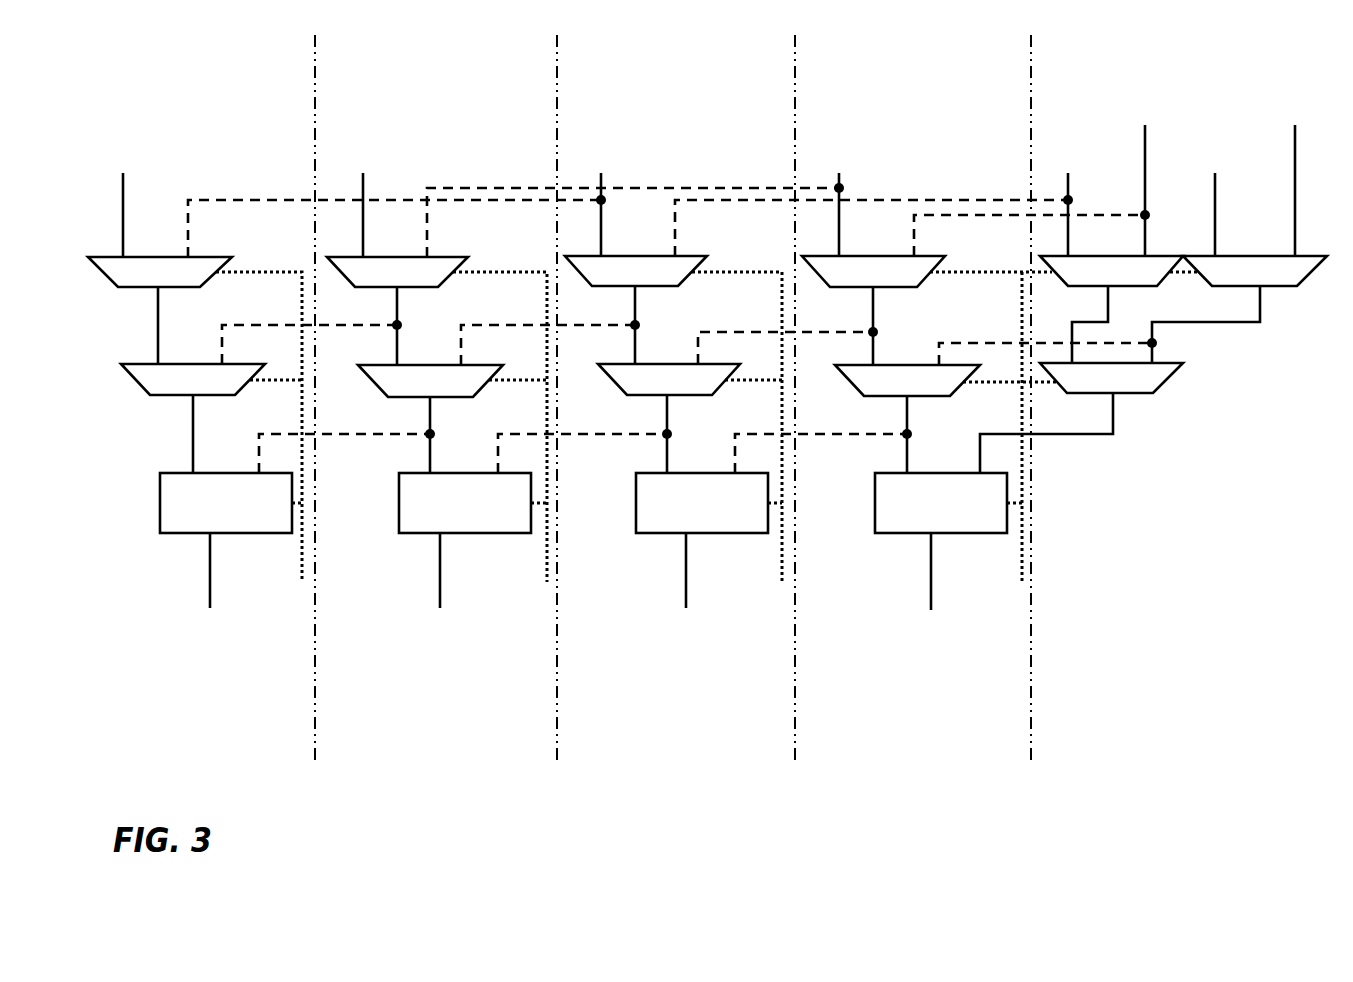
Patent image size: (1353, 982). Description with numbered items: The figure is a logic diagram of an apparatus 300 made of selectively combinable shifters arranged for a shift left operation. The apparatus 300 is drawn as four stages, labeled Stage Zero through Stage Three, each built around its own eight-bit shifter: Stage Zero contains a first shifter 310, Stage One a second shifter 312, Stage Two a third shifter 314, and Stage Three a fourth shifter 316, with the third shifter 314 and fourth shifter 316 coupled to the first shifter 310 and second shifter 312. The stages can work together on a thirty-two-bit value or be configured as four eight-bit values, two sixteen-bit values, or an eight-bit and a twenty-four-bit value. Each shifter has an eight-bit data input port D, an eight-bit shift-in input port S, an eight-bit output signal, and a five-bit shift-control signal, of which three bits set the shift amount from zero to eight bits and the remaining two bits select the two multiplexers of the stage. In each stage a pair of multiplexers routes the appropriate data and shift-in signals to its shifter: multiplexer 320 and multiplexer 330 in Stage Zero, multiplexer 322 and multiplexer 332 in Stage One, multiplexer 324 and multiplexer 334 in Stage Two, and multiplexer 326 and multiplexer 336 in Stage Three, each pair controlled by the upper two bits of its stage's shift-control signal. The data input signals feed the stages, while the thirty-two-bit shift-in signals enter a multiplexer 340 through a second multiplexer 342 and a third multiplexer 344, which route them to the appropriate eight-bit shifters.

The apparatus 300 is at (1158, 763).
The first shifter 310 is at (927, 525).
The second shifter 312 is at (688, 525).
The third shifter 314 is at (451, 525).
The fourth shifter 316 is at (212, 525).
The multiplexer 320 is at (893, 391).
The multiplexer 322 is at (654, 391).
The multiplexer 324 is at (416, 391).
The multiplexer 326 is at (179, 391).
The multiplexer 330 is at (860, 283).
The multiplexer 332 is at (622, 283).
The multiplexer 334 is at (383, 283).
The multiplexer 336 is at (146, 283).
The multiplexer 340 is at (1098, 389).
The second multiplexer 342 is at (1241, 283).
The third multiplexer 344 is at (1098, 283).